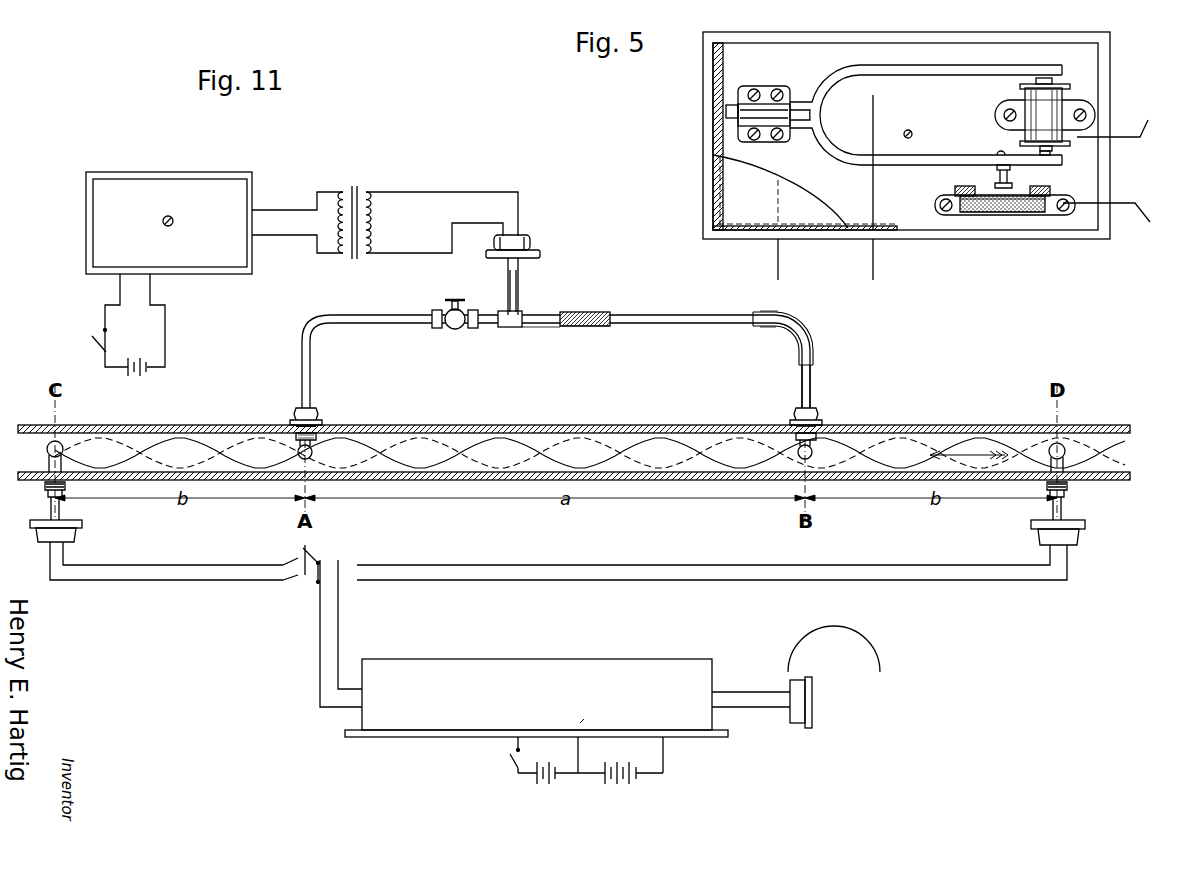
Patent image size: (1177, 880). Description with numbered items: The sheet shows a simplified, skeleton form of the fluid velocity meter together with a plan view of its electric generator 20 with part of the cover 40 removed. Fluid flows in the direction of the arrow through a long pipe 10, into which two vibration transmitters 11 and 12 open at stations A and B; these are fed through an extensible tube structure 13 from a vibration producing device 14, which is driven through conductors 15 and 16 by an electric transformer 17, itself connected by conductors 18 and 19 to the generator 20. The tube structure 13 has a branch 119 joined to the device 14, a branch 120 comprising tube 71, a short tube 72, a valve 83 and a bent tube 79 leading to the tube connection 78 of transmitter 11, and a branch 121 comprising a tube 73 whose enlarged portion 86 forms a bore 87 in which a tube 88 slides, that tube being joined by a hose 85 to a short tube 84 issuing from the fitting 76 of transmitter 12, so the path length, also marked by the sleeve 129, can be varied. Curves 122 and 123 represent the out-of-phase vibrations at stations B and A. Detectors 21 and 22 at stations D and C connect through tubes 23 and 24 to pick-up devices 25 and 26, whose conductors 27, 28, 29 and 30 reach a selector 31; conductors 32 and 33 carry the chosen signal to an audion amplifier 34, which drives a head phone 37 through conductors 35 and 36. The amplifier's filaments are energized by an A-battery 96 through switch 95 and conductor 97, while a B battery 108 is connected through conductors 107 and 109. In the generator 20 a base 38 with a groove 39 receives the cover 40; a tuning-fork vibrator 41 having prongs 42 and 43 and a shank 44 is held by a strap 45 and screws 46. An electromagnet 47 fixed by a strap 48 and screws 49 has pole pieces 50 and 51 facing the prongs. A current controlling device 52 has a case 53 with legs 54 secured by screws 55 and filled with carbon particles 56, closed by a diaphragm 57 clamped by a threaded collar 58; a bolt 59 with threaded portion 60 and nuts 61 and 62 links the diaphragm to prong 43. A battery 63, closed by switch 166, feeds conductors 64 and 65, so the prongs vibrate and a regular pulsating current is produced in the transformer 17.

In FIG. 11, the pipe 10 is at (910, 426).
In FIG. 11, the vibration transmitter 11 is at (316, 450).
In FIG. 11, the vibration transmitter 12 is at (814, 450).
In FIG. 11, the extensible tube structure 13 is at (542, 315).
In FIG. 11, the vibration producing device 14 is at (533, 240).
In FIG. 11, the conductor 15 is at (410, 192).
In FIG. 11, the conductor 16 is at (397, 252).
In FIG. 11, the electric transformer 17 is at (355, 189).
In FIG. 11, the conductor 18 is at (270, 209).
In FIG. 5, the conductor 18 is at (1121, 118).
In FIG. 11, the conductor 19 is at (287, 237).
In FIG. 5, the conductor 19 is at (1117, 222).
In FIG. 11, the electric generator 20 is at (129, 187).
In FIG. 5, the electric generator 20 is at (1086, 60).
In FIG. 11, the vibration detector 21 is at (1064, 446).
In FIG. 11, the vibration detector 22 is at (62, 446).
In FIG. 11, the tube 23 is at (50, 498).
In FIG. 11, the tube 24 is at (1063, 513).
In FIG. 11, the electric pick-up device 25 is at (72, 540).
In FIG. 11, the electric pick-up device 26 is at (1080, 546).
In FIG. 11, the conductor 27 is at (150, 564).
In FIG. 11, the conductor 28 is at (160, 581).
In FIG. 11, the conductor 29 is at (545, 565).
In FIG. 11, the conductor 30 is at (540, 582).
In FIG. 11, the selector 31 is at (325, 556).
In FIG. 11, the conductor 32 is at (320, 634).
In FIG. 11, the conductor 33 is at (338, 642).
In FIG. 11, the audion amplifier 34 is at (525, 668).
In FIG. 11, the conductor 35 is at (737, 692).
In FIG. 11, the conductor 36 is at (753, 708).
In FIG. 11, the head phone 37 is at (800, 708).
In FIG. 5, the base 38 is at (806, 55).
In FIG. 5, the groove 39 is at (997, 40).
In FIG. 11, the cover 40 is at (206, 190).
In FIG. 5, the cover 40 is at (713, 108).
In FIG. 5, the vibrator 41 is at (830, 82).
In FIG. 5, the prong 42 is at (946, 72).
In FIG. 5, the prong 43 is at (921, 155).
In FIG. 5, the shank 44 is at (734, 113).
In FIG. 5, the strap 45 is at (765, 88).
In FIG. 5, the screw 46 is at (752, 92).
In FIG. 5, the electromagnet 47 is at (1068, 98).
In FIG. 5, the strap 48 is at (1022, 122).
In FIG. 5, the screw 49 is at (1004, 114).
In FIG. 5, the pole piece 50 is at (1046, 80).
In FIG. 5, the pole piece 51 is at (1052, 154).
In FIG. 5, the current controlling device 52 is at (986, 214).
In FIG. 5, the case 53 is at (1025, 214).
In FIG. 5, the leg 54 is at (955, 216).
In FIG. 5, the screw 55 is at (938, 205).
In FIG. 5, the carbon particles 56 is at (1005, 214).
In FIG. 5, the vibrating diaphragm 57 is at (975, 188).
In FIG. 5, the threaded collar 58 is at (955, 191).
In FIG. 5, the stud or short bolt 59 is at (976, 212).
In FIG. 5, the threaded portion 60 is at (1012, 181).
In FIG. 5, the nut 61 is at (996, 151).
In FIG. 5, the nut 62 is at (1012, 168).
In FIG. 11, the battery 63 is at (140, 373).
In FIG. 11, the conductor 64 is at (105, 318).
In FIG. 5, the conductor 64 is at (776, 262).
In FIG. 11, the conductor 65 is at (165, 307).
In FIG. 5, the conductor 65 is at (871, 262).
In FIG. 11, the tube 71 is at (506, 282).
In FIG. 11, the short tube 72 is at (497, 328).
In FIG. 11, the tube 73 is at (531, 328).
In FIG. 11, the fitting 76 is at (296, 420).
In FIG. 11, the tube connection 78 is at (313, 410).
In FIG. 11, the bent tube 79 is at (302, 349).
In FIG. 11, the valve 83 is at (455, 328).
In FIG. 11, the short tube 84 is at (811, 400).
In FIG. 11, the hose 85 is at (813, 342).
In FIG. 11, the enlarged portion 86 is at (597, 328).
In FIG. 11, the longitudinal bore 87 is at (568, 318).
In FIG. 11, the tube 88 is at (680, 326).
In FIG. 11, the switch 95 is at (512, 752).
In FIG. 11, the A-battery 96 is at (540, 782).
In FIG. 11, the conductor 97 is at (581, 757).
In FIG. 11, the conductor 107 is at (665, 748).
In FIG. 11, the B battery 108 is at (630, 786).
In FIG. 11, the conductor 109 is at (568, 776).
In FIG. 11, the branch 119 is at (520, 274).
In FIG. 11, the branch 120 is at (330, 315).
In FIG. 11, the branch 121 is at (790, 316).
In FIG. 11, the curve 122 is at (727, 440).
In FIG. 11, the curve 123 is at (242, 440).
In FIG. 11, the sleeve 129 is at (620, 316).
In FIG. 11, the switch 166 is at (96, 351).